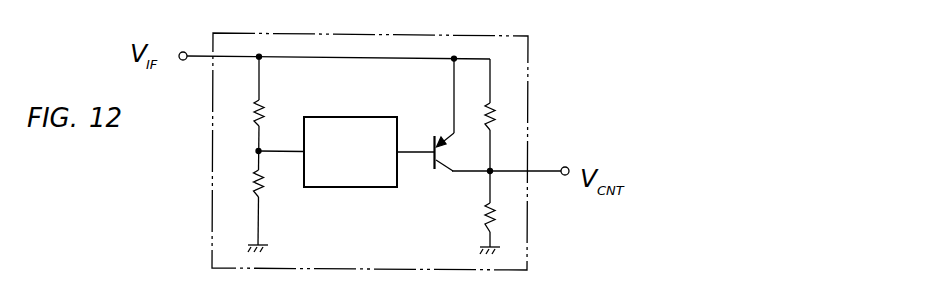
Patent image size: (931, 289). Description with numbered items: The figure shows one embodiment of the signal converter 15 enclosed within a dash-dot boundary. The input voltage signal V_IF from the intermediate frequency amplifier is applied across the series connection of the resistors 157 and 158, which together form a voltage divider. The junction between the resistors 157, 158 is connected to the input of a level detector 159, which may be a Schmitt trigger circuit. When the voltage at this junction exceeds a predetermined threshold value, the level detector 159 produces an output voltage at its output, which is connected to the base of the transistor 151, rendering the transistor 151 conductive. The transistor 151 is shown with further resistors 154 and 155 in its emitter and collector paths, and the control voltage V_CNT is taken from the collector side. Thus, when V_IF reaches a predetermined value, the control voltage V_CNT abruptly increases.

The signal converter 15 is at (530, 59).
The transistor 151 is at (434, 169).
The resistor 154 is at (484, 221).
The resistor 155 is at (492, 113).
The resistor 157 is at (262, 111).
The resistor 158 is at (262, 192).
The level detector 159 is at (372, 117).